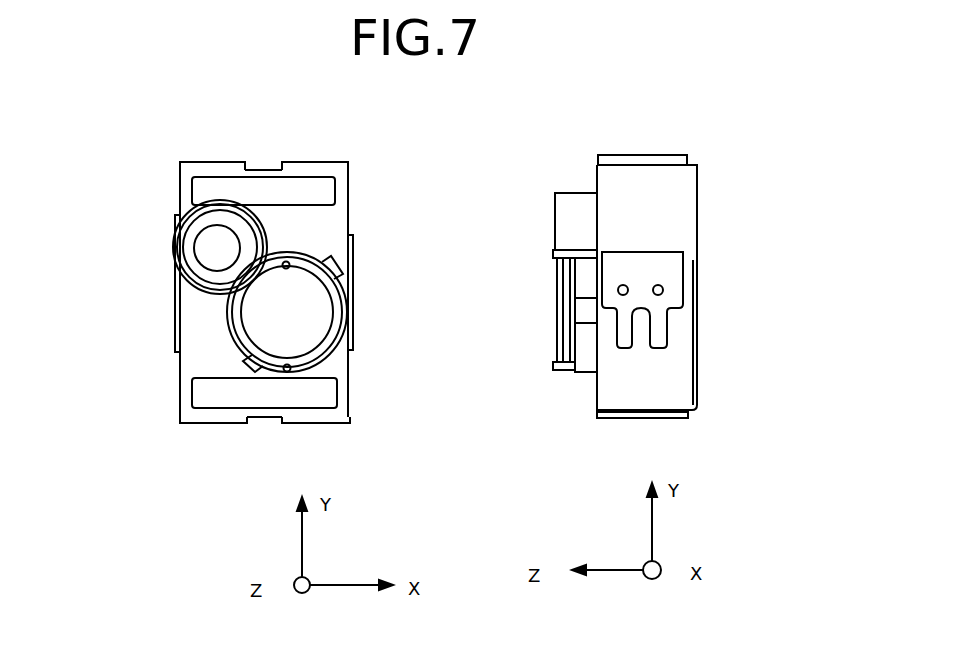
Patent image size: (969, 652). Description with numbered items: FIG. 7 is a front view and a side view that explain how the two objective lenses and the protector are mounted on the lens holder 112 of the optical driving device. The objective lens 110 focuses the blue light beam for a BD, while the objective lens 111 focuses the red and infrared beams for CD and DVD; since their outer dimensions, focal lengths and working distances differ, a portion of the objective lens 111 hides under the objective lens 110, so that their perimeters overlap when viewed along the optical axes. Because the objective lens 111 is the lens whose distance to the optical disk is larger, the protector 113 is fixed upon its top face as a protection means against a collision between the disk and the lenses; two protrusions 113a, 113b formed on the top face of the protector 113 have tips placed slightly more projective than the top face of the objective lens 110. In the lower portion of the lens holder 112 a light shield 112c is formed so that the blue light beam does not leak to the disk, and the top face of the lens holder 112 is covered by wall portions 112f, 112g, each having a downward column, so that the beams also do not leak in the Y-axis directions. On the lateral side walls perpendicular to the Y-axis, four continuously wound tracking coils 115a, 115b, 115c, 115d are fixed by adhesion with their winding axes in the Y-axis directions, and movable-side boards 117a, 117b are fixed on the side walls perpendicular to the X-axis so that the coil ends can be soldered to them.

The objective lens 110 is at (178, 234).
The objective lens 111 is at (265, 308).
The lens holder 112 is at (178, 293).
The light shield 112c is at (203, 240).
The wall portion 112f is at (275, 188).
The wall portion 112g is at (271, 398).
The protector 113 is at (555, 307).
The protrusion 113a is at (555, 258).
The protrusion 113b is at (553, 368).
The tracking coil 115a is at (222, 158).
The tracking coil 115b is at (337, 162).
The tracking coil 115c is at (197, 423).
The tracking coil 115d is at (315, 424).
The movable-side board 117a is at (175, 328).
The movable-side board 117b is at (353, 335).